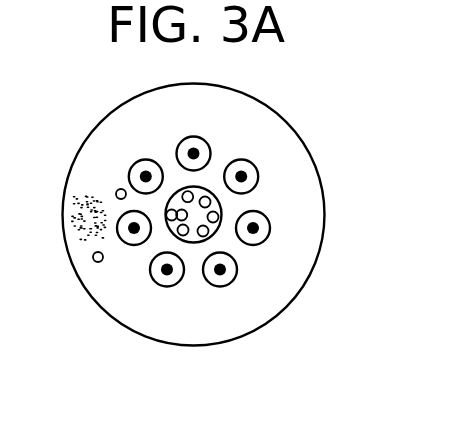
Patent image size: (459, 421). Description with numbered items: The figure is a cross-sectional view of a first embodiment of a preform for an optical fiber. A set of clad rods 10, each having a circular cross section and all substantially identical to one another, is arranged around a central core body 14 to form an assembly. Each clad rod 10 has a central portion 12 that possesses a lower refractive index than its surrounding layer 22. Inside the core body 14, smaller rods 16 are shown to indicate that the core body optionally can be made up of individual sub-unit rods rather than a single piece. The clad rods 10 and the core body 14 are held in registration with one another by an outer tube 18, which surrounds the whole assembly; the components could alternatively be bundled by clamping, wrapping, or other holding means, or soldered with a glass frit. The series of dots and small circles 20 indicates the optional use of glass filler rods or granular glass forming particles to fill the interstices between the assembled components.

The clad rods 10 is at (250, 247).
The central portion 12 is at (196, 154).
The core body 14 is at (192, 243).
The rods 16 is at (214, 215).
The tube 18 is at (72, 266).
The glass filler rods or granular glass forming particles 20 is at (79, 222).
The surrounding layer 22 is at (146, 172).